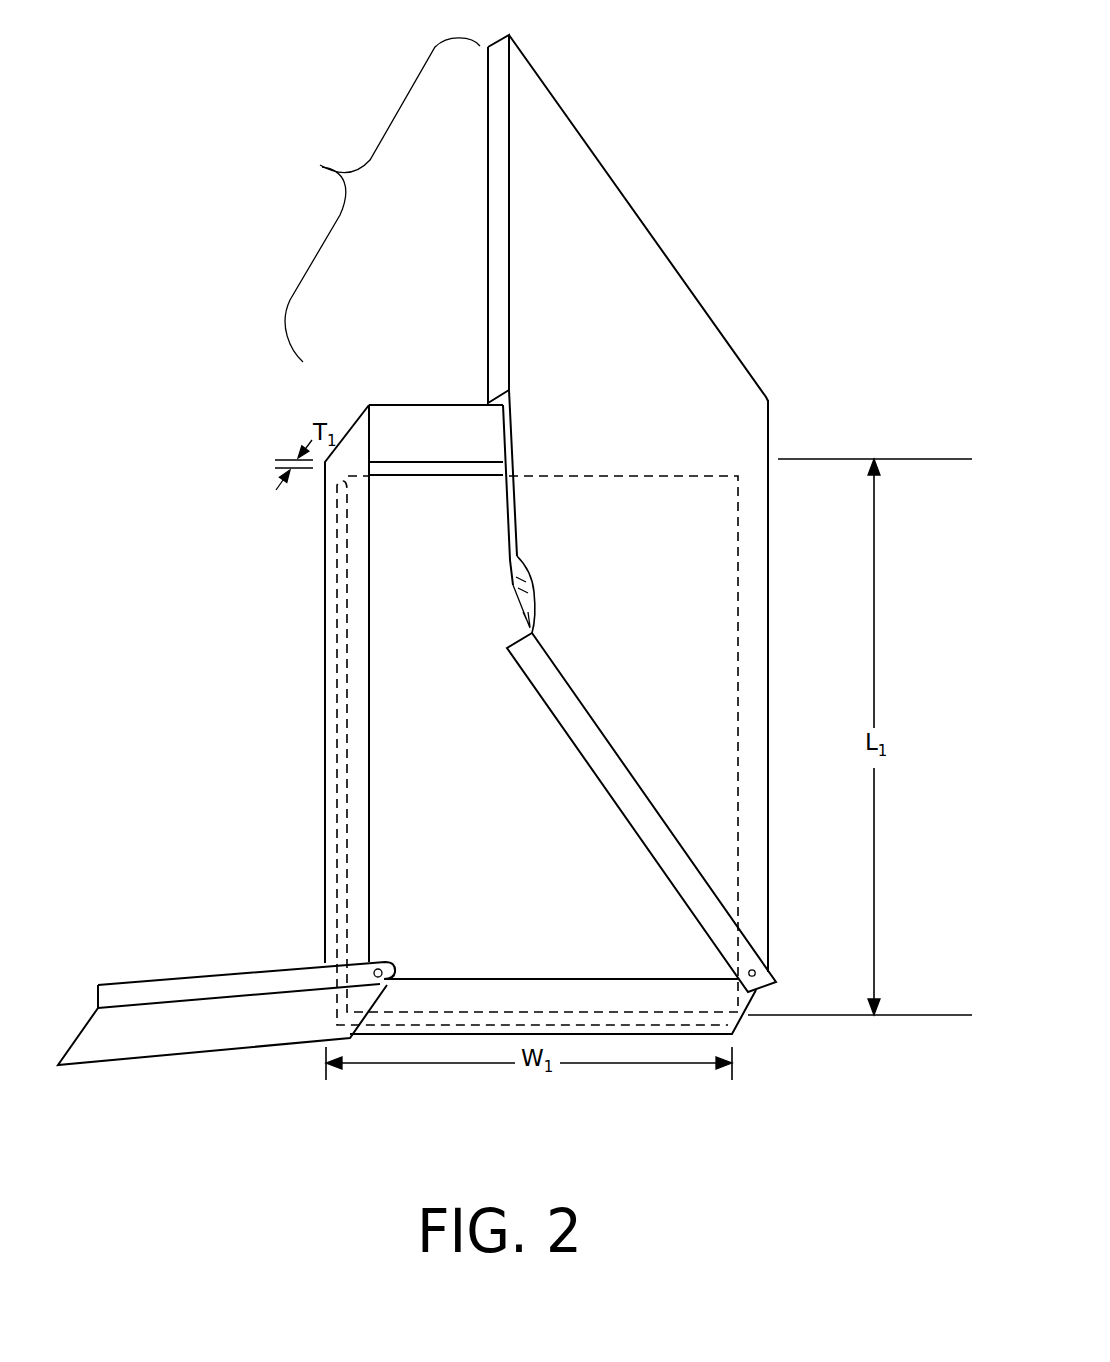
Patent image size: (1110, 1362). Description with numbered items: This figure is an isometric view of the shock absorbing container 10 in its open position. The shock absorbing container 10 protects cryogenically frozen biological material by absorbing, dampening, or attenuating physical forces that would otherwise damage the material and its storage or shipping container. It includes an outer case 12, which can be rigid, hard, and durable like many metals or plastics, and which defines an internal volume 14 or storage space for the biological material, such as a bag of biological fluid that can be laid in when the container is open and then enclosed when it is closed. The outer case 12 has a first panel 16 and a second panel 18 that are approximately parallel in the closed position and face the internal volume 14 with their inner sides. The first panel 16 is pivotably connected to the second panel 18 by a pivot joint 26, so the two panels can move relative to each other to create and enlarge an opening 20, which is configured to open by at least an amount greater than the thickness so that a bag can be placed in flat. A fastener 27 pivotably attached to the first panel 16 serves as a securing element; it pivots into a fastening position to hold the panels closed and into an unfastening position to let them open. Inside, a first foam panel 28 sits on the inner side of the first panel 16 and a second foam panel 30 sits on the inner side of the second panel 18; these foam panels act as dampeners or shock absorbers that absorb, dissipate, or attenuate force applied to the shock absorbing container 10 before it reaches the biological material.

The shock absorbing container 10 is at (697, 1088).
The outer case 12 is at (770, 690).
The internal volume 14 is at (420, 606).
The first panel 16 is at (443, 466).
The second panel 18 is at (667, 253).
The opening 20 is at (400, 310).
The pivot joint 26 is at (768, 973).
The fastener 27 is at (240, 1040).
The first foam panel 28 is at (412, 473).
The second foam panel 30 is at (515, 592).